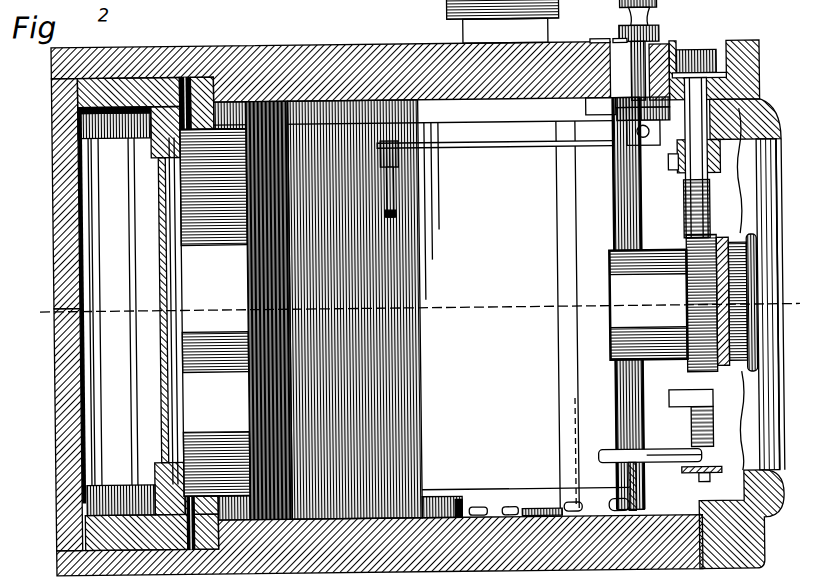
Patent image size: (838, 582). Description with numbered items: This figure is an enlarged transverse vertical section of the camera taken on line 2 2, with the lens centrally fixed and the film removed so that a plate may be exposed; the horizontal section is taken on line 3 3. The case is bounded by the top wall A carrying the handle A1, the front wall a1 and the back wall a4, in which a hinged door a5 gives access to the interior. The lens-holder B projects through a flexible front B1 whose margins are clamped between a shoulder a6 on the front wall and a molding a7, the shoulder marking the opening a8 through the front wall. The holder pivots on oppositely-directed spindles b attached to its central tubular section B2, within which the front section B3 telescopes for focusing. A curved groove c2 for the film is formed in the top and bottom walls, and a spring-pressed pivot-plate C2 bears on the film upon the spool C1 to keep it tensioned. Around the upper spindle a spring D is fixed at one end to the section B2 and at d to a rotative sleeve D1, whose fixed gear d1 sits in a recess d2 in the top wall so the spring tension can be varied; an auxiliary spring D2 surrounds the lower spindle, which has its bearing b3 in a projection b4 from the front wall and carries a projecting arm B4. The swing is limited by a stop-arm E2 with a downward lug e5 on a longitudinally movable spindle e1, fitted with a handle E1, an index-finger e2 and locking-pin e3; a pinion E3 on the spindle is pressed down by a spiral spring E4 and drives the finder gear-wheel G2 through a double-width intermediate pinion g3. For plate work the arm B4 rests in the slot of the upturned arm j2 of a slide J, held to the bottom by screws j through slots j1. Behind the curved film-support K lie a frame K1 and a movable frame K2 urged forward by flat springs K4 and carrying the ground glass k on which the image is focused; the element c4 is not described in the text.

The top wall A is at (336, 44).
The handle A1 is at (470, 40).
The front wall a1 is at (760, 537).
The back wall a4 is at (57, 514).
The hinged door a5 is at (57, 397).
The shoulder a6 is at (748, 124).
The molding a7 is at (728, 146).
The opening a8 is at (745, 115).
The lens-holder B is at (648, 305).
The flexible front B1 is at (756, 402).
The central tubular section B2 is at (702, 302).
The front section B3 is at (782, 316).
The projecting arm B4 is at (598, 452).
The spindles b is at (702, 122).
The bearing b3 is at (697, 481).
The projection b4 is at (706, 477).
The spool C1 is at (656, 382).
The spring-pressed pivot-plate C2 is at (625, 219).
The curved groove c2 is at (193, 494).
The upper pin c4 is at (190, 115).
The spring D is at (686, 195).
The rotative sleeve D1 is at (725, 146).
The auxiliary spring D2 is at (690, 411).
The spring attachment point d is at (677, 167).
The fixed gear d1 is at (692, 76).
The recess d2 is at (725, 52).
The handle E1 is at (624, 18).
The stop-arm E2 is at (518, 150).
The pinion E3 is at (600, 138).
The spiral spring E4 is at (643, 100).
The spindle e1 is at (643, 45).
The index-finger e2 is at (585, 29).
The locking-pin e3 is at (610, 28).
The lug e5 is at (395, 188).
The gear-wheel G2 is at (590, 107).
The intermediate gear-pinion g3 is at (624, 106).
The slide J is at (542, 509).
The screws j is at (480, 507).
The slots j1 is at (508, 507).
The upturned arm j2 is at (630, 476).
The curved film-support K is at (422, 308).
The frame K1 is at (247, 278).
The movable frame K2 is at (165, 127).
The flat springs K4 is at (110, 482).
The ground glass k is at (161, 342).
The section line 2 is at (494, 253).
The section line 3 is at (416, 305).